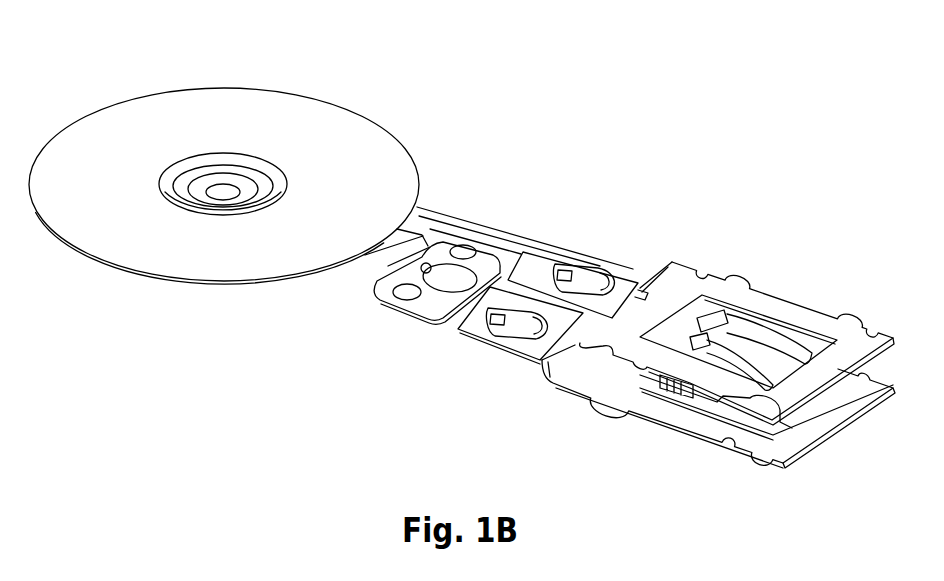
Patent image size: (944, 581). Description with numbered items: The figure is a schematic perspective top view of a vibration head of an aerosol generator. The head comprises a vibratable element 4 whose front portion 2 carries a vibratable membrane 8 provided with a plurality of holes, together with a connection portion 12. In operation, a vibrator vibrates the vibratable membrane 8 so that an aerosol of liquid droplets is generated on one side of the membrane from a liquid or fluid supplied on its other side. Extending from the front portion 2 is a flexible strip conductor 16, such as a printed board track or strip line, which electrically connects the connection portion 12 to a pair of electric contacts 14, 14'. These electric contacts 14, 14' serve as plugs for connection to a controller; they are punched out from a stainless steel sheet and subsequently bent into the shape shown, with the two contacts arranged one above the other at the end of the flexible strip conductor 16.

The front portion 2 is at (149, 94).
The vibratable membrane 8 is at (241, 175).
The vibratable element 4 is at (508, 192).
The connection portion 12 is at (383, 303).
The flexible strip conductor 16 is at (534, 240).
The electric contact 14 is at (737, 321).
The electric contact 14' is at (718, 430).